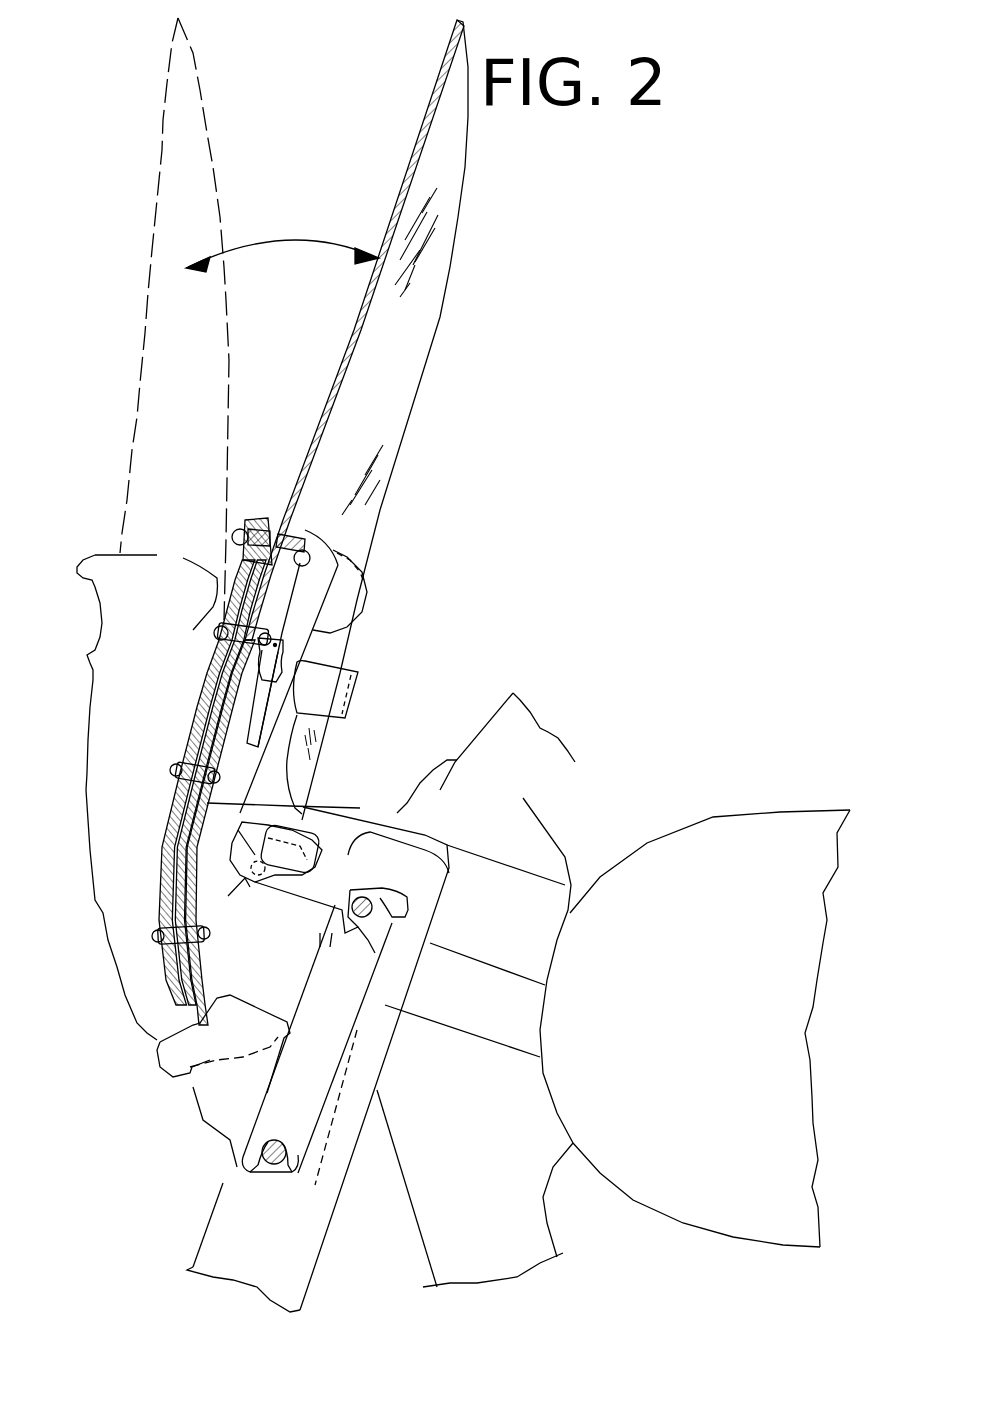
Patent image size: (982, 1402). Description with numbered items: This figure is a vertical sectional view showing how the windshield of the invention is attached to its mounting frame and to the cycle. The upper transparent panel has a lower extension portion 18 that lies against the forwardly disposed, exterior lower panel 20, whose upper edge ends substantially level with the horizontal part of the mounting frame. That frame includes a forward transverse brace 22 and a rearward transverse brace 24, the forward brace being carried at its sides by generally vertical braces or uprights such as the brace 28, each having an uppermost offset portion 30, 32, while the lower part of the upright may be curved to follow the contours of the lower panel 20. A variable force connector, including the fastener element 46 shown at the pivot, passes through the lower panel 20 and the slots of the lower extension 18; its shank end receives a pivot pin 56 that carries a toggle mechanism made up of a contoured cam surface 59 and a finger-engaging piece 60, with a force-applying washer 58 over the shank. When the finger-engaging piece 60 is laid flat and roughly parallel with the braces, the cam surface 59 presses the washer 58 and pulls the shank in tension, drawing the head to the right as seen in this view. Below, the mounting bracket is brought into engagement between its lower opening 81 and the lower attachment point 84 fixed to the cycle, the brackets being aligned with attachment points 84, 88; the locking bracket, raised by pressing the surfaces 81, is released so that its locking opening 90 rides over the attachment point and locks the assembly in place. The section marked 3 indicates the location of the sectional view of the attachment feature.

The lower extension portion 18 is at (250, 648).
The lower panel 20 is at (162, 1040).
The forward transverse brace 22 is at (264, 518).
The rearward transverse brace 24 is at (296, 531).
The vertically extending brace 28 is at (163, 885).
The uppermost offset portion 30 is at (260, 524).
The uppermost offset portion 32 is at (306, 548).
The fastener 46 is at (232, 537).
The pivot pin 56 is at (282, 645).
The force-applying washer 58 is at (268, 634).
The contoured cam surface 59 is at (290, 677).
The finger-engaging piece 60 is at (263, 733).
The lower opening 81 is at (257, 1173).
The lower attachment point 84 is at (280, 1157).
The attachment point 88 is at (357, 926).
The locking opening 90 is at (350, 892).
The section line 3- 3 is at (292, 1106).